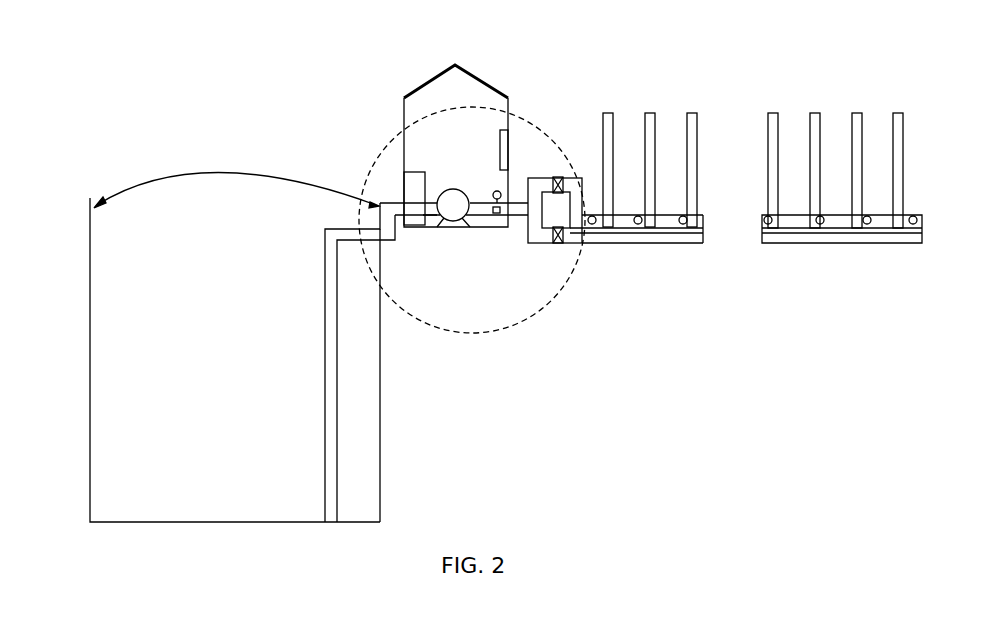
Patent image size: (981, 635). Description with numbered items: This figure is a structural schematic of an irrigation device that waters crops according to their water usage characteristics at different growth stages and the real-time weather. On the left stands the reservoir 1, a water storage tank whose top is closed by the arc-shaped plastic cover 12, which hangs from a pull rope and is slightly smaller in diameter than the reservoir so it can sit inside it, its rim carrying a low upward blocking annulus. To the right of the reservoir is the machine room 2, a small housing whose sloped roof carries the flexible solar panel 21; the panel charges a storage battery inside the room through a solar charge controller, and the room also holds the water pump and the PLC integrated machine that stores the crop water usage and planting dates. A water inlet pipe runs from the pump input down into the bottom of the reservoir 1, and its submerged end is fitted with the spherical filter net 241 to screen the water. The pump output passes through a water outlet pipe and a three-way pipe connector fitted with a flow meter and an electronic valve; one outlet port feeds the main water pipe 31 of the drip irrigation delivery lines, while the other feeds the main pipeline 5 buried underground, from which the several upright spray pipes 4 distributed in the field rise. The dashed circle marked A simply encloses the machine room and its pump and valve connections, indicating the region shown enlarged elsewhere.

The reservoir 1 is at (99, 376).
The arc-shaped plastic cover 12 is at (197, 173).
The machine room 2 is at (404, 118).
The flexible solar panel 21 is at (439, 68).
The spherical filter net 241 is at (340, 517).
The spray pipe 4 is at (607, 122).
The main pipeline 5 is at (619, 238).
The main water pipe 31 is at (796, 221).
The enlarged detail region A is at (472, 318).